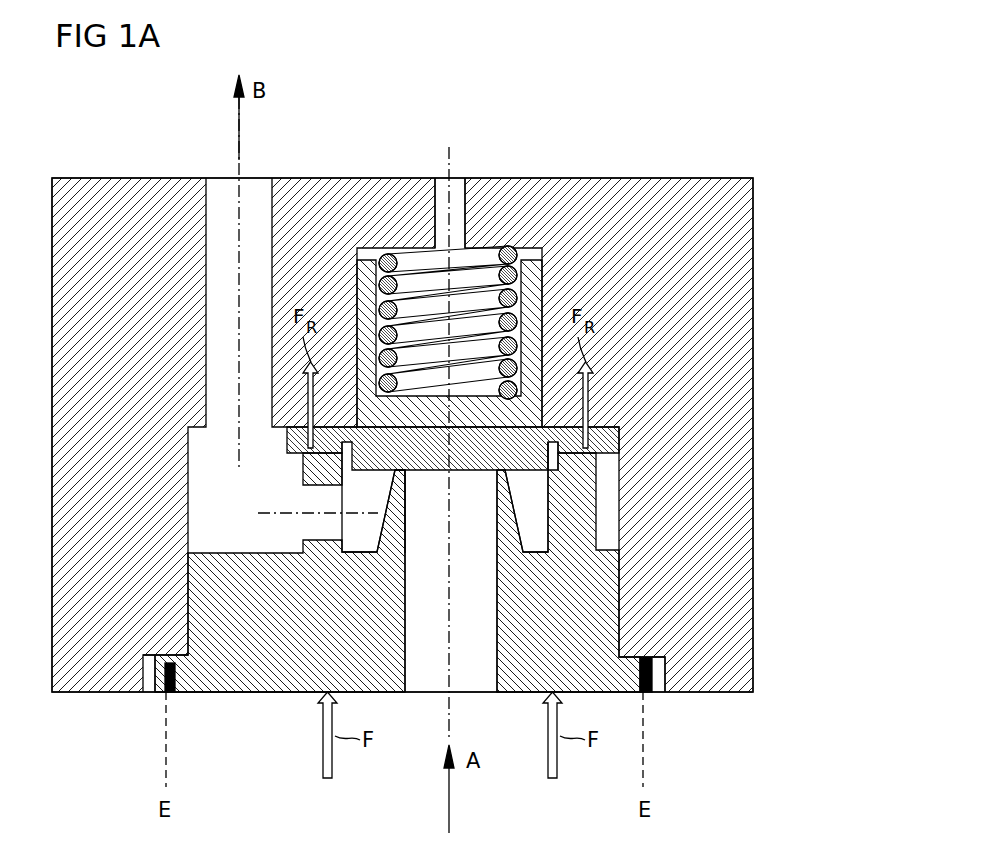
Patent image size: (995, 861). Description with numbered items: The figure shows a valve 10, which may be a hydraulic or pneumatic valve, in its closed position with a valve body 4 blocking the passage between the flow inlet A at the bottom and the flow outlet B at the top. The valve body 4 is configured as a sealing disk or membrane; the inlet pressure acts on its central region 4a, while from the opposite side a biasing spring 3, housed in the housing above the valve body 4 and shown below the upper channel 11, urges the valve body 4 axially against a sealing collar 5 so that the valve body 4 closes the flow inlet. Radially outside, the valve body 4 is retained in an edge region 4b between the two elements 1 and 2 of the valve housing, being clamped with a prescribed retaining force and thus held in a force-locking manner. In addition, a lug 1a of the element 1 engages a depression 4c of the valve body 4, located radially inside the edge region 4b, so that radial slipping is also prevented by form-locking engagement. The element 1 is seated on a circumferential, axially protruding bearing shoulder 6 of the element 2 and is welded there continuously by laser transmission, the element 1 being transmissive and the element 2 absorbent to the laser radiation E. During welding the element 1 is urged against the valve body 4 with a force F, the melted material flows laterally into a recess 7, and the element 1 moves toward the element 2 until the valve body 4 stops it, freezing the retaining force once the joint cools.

The element 1 is at (261, 694).
The lug 1a is at (549, 446).
The element 2 is at (731, 355).
The biasing spring 3 is at (510, 246).
The valve body 4 is at (620, 431).
The central region 4a is at (473, 472).
The edge region 4b is at (556, 472).
The depression 4c is at (547, 426).
The sealing collar 5 is at (406, 487).
The bearing shoulder 6 is at (648, 655).
The recess 7 is at (654, 694).
The valve 10 is at (129, 160).
The channel 11 is at (440, 178).